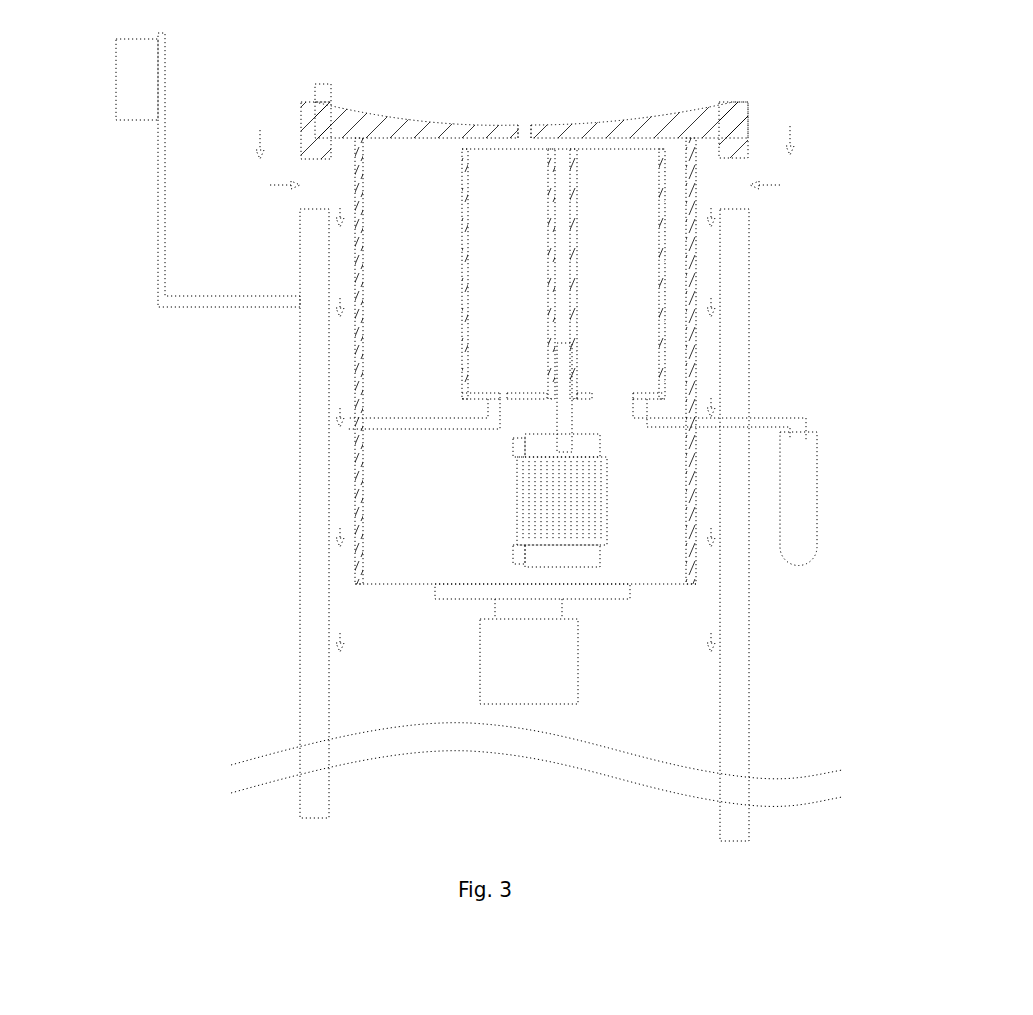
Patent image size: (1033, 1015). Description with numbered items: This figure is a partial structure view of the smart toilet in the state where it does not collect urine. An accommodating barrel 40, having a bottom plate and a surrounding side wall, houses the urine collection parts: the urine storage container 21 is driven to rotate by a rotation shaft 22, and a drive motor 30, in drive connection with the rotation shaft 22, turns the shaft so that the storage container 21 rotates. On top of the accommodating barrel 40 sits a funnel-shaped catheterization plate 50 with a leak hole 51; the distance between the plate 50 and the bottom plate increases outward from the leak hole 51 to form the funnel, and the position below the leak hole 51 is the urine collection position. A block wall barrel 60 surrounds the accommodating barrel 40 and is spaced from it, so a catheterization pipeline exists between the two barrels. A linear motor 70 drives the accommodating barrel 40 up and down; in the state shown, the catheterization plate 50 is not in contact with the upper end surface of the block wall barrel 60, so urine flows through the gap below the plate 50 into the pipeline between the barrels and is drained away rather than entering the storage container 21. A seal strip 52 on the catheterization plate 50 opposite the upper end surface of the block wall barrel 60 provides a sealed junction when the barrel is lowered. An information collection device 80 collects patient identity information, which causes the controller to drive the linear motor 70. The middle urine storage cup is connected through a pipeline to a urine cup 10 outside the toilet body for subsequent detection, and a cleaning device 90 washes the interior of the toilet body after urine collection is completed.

The urine cup 10 is at (817, 492).
The urine storage container 21 is at (648, 205).
The rotation shaft 22 is at (567, 263).
The drive motor 30 is at (600, 552).
The accommodating barrel 40 is at (693, 315).
The catheterization plate 50 is at (731, 104).
The leak hole 51 is at (523, 125).
The seal strip 52 is at (748, 144).
The block wall barrel 60 is at (748, 371).
The linear motor 70 is at (578, 697).
The information collection device 80 is at (153, 77).
The cleaning device 90 is at (323, 93).